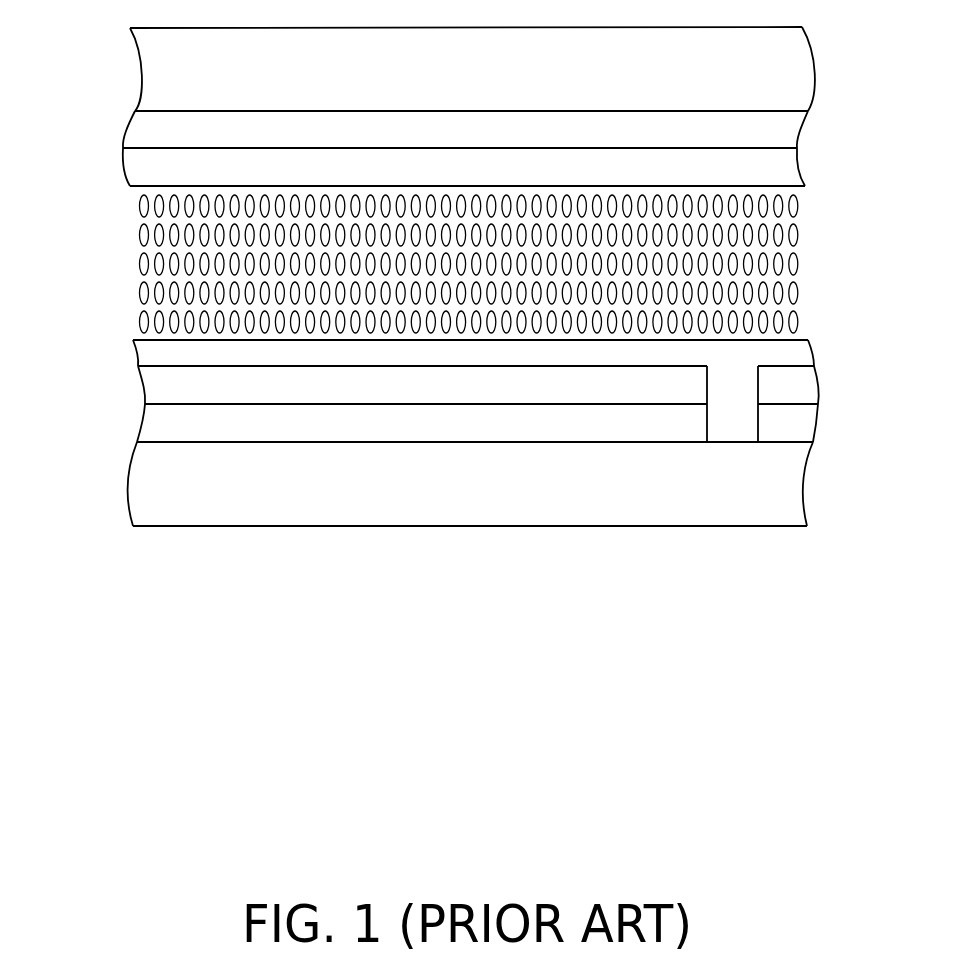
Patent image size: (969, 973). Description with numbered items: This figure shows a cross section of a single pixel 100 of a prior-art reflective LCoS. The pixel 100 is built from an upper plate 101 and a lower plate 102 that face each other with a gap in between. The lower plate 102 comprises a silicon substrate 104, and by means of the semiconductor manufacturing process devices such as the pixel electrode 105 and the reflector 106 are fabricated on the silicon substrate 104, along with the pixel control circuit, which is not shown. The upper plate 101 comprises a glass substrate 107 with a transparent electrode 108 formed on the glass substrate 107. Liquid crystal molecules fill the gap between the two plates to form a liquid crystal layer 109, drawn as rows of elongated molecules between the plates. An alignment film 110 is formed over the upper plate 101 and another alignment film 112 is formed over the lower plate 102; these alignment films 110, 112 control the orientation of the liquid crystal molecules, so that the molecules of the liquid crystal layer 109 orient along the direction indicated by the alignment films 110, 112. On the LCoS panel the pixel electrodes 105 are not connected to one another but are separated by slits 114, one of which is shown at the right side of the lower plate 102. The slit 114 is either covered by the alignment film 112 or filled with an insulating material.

The pixel 100 is at (461, 334).
The upper plate 101 is at (456, 122).
The lower plate 102 is at (462, 425).
The silicon substrate 104 is at (801, 479).
The pixel electrode 105 is at (815, 432).
The reflector 106 is at (818, 397).
The glass substrate 107 is at (812, 50).
The transparent electrode 108 is at (806, 119).
The liquid crystal layer 109 is at (102, 193).
The alignment film 110 is at (802, 165).
The alignment film 112 is at (810, 352).
The slit 114 is at (729, 402).